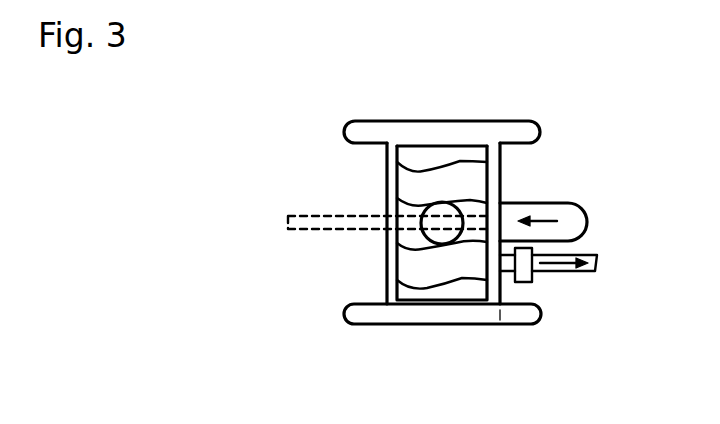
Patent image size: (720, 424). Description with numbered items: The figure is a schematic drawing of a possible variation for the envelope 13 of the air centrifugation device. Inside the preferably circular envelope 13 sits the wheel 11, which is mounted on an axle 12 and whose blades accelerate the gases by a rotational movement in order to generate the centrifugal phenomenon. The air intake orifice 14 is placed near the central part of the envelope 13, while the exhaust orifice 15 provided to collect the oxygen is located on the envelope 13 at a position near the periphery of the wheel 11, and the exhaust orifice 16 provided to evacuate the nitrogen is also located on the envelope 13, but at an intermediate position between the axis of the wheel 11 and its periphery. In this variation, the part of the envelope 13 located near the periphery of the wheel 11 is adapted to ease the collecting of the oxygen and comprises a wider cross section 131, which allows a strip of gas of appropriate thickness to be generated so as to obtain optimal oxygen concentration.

The envelope 13 is at (442, 120).
The wheel 11 is at (432, 188).
The exhaust orifice 15 is at (442, 218).
The axle 12 is at (288, 226).
The air intake orifice 14 is at (572, 222).
The exhaust orifice 16 is at (558, 266).
The wider cross section 131 is at (369, 314).